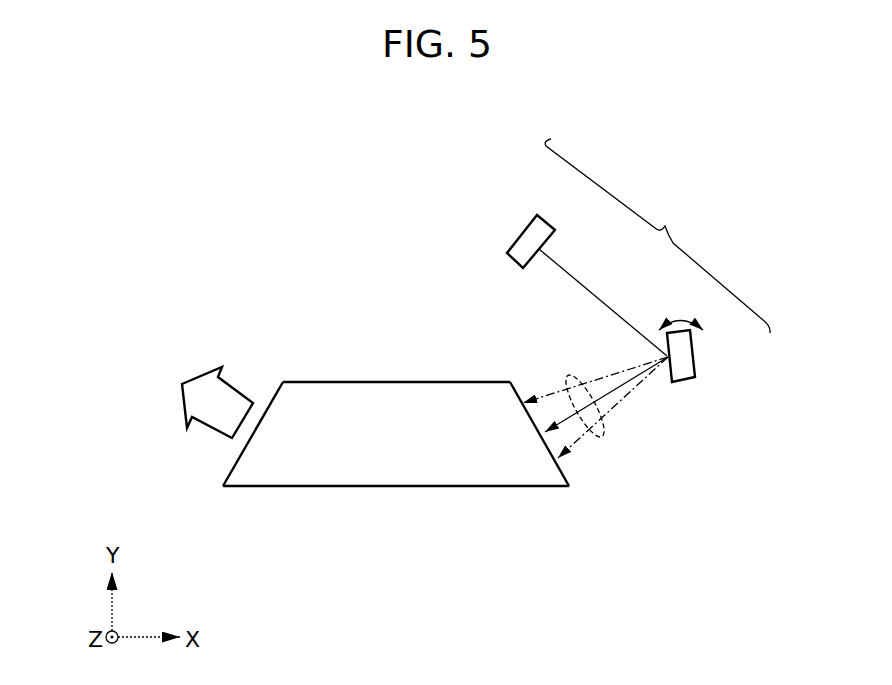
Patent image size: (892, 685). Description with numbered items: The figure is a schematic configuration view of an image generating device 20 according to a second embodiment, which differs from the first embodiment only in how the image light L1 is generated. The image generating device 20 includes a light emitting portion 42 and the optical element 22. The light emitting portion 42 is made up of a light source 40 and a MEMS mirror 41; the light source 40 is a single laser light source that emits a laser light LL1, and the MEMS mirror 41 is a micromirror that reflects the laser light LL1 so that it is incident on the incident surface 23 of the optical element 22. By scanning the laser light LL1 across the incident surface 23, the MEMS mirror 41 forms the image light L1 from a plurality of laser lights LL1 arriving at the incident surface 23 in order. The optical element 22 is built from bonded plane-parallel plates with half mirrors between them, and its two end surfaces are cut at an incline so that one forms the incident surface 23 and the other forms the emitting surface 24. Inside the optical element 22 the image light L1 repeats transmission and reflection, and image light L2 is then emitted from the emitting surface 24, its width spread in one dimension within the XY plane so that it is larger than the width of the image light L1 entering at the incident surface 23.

The image generating device 20 is at (396, 386).
The optical element 22 is at (364, 352).
The incident surface 23 is at (568, 473).
The emitting surface 24 is at (227, 477).
The light source 40 is at (546, 227).
The MEMS mirror 41 is at (692, 367).
The light emitting portion 42 is at (657, 236).
The image light L1 is at (567, 375).
The image light L2 is at (227, 426).
The laser light LL1 is at (594, 296).